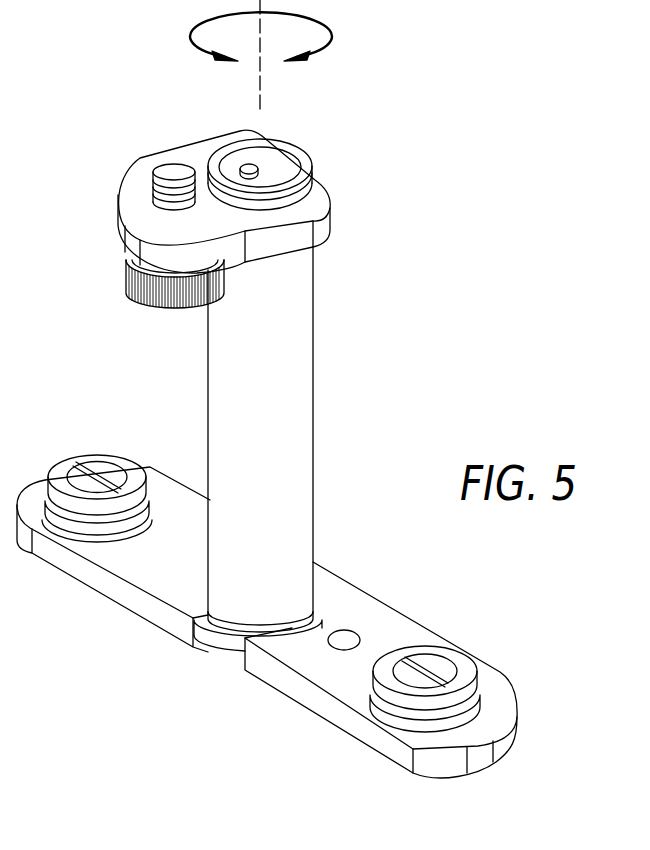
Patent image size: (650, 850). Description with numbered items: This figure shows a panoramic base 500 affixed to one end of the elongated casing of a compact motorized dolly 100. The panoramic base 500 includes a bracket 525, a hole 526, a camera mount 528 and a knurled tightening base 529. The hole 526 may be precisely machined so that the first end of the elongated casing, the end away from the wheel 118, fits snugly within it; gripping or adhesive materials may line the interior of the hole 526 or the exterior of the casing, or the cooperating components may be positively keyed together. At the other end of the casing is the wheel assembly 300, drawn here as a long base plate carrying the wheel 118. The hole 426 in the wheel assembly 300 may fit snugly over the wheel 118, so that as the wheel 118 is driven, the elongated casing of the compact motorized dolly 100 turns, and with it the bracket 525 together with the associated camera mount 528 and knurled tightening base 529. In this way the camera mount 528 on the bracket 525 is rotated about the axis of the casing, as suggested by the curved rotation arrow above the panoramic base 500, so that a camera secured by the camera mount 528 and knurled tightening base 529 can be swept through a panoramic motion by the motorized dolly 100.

The compact motorized dolly 100 is at (405, 388).
The panoramic base 500 is at (352, 180).
The bracket 525 is at (322, 218).
The hole 526 is at (272, 143).
The camera mount 528 is at (167, 175).
The knurled tightening base 529 is at (127, 278).
The wheel assembly 300 is at (175, 678).
The wheel 118 is at (220, 623).
The hole 426 is at (313, 615).